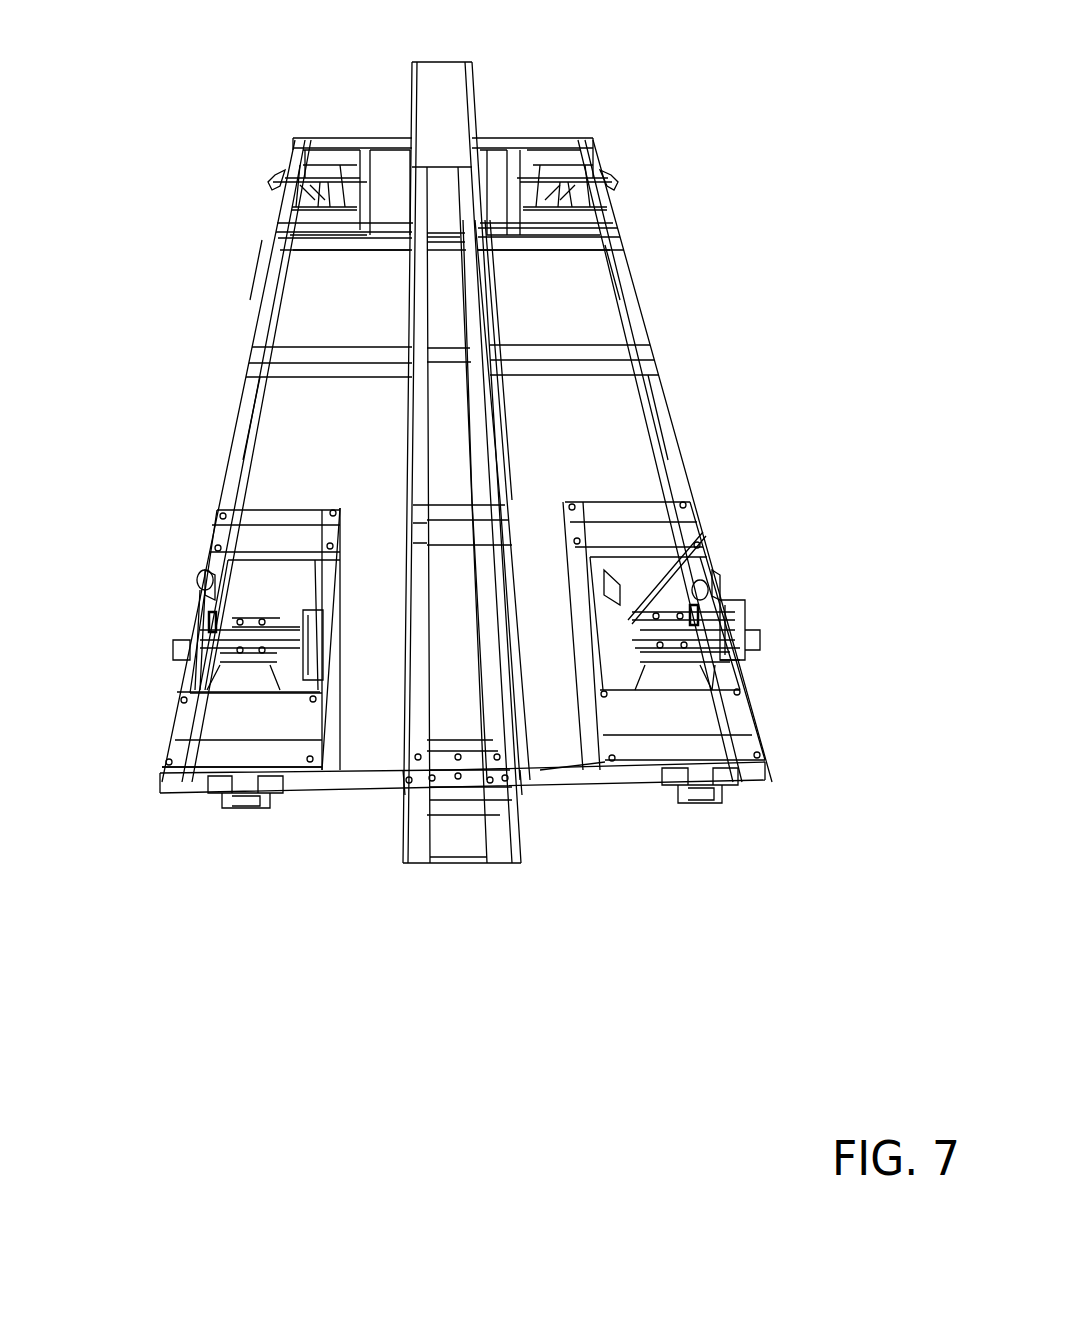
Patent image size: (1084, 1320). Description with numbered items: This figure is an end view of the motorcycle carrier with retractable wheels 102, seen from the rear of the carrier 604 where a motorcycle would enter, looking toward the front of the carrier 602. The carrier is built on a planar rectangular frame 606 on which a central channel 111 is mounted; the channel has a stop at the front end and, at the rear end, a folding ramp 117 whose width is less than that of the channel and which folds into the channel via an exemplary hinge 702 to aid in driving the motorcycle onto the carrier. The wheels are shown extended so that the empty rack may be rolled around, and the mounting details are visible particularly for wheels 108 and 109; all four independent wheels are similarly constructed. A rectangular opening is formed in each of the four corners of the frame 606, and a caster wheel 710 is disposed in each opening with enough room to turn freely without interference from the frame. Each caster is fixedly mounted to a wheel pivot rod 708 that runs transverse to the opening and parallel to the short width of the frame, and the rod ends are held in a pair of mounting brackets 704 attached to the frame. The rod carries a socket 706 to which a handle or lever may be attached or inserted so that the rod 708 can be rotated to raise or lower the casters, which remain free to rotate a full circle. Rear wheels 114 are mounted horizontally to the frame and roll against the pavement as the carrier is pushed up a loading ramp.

The motorcycle carrier 102 is at (492, 604).
The frame 606 is at (653, 400).
The front of carrier 602 is at (534, 153).
The rear of carrier 604 is at (537, 928).
The folding ramp 117 is at (420, 848).
The central channel 111 is at (507, 740).
The hinge 702 is at (410, 782).
The wheel 109 is at (152, 707).
The wheel 108 is at (812, 728).
The socket 706 is at (203, 617).
The wheel pivot rod 708 is at (700, 537).
The caster wheel 710 is at (718, 607).
The mounting bracket 704 is at (740, 627).
The rear wheels 114 is at (227, 808).